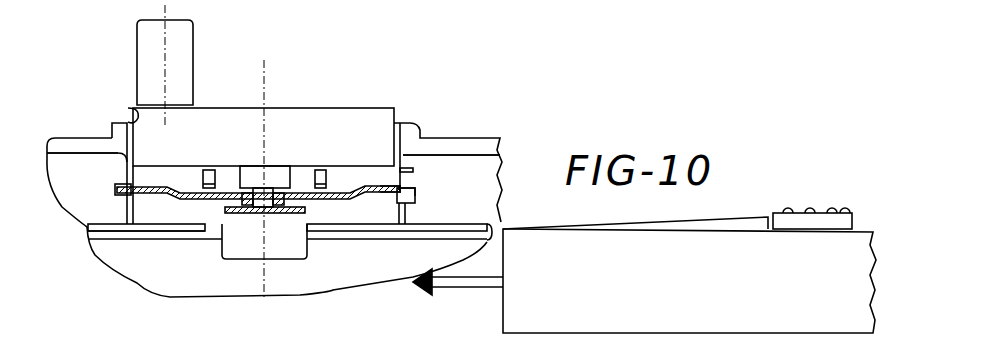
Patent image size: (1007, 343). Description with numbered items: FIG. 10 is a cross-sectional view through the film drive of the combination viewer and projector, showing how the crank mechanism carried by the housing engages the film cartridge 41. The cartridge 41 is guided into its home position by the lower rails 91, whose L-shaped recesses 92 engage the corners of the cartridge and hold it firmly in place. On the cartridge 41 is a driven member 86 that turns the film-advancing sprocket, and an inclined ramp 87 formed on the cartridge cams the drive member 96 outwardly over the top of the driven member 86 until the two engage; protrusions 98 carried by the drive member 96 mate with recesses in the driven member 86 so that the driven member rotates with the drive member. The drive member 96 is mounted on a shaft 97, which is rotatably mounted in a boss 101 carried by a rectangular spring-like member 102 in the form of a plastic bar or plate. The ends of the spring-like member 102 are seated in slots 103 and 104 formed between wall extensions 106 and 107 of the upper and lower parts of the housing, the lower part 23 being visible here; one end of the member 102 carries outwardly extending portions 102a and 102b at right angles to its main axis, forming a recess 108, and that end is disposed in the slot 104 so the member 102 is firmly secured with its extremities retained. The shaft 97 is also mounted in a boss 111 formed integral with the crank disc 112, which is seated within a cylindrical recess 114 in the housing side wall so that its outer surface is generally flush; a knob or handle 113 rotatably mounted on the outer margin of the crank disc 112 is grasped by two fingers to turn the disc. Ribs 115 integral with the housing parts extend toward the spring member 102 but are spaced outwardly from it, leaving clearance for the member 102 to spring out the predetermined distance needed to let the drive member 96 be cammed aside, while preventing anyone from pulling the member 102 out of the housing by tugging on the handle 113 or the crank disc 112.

The lower part of housing 23 is at (62, 138).
The cartridge 41 is at (501, 319).
The driven member 86 is at (853, 222).
The inclined ramp 87 is at (733, 222).
The lower rails 91 is at (133, 239).
The L-shaped recesses 92 is at (172, 240).
The drive member 96 is at (268, 212).
The shaft 97 is at (250, 215).
The protrusions 98 is at (813, 211).
The boss 101 is at (247, 193).
The spring-like member 102 is at (394, 186).
The outwardly extending portion 102a is at (397, 198).
The outwardly extending portion 102b is at (415, 196).
The slot 103 is at (120, 194).
The slot 104 is at (413, 171).
The wall extension 106 is at (122, 170).
The wall extension 107 is at (414, 211).
The recess 108 is at (399, 222).
The boss 111 is at (275, 172).
The crank disc 112 is at (292, 120).
The knob or handle 113 is at (192, 34).
The cylindrical recess 114 is at (135, 108).
The ribs 115 is at (209, 170).